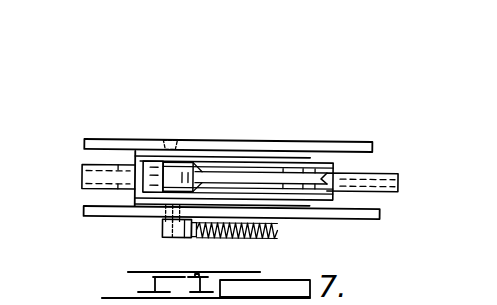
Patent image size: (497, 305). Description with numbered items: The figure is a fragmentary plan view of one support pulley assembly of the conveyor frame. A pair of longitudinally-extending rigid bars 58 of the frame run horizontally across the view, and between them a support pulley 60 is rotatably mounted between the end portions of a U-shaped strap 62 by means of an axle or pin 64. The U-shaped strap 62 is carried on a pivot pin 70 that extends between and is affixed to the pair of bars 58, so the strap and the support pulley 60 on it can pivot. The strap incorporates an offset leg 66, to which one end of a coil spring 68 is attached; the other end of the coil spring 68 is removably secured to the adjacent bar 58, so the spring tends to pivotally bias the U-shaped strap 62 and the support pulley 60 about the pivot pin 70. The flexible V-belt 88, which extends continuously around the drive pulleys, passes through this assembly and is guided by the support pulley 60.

The rigid bars 58 is at (108, 148).
The support pulley 60 is at (283, 163).
The U-shaped strap 62 is at (213, 153).
The axle or pin 64 is at (270, 158).
The offset leg 66 is at (166, 233).
The coil spring 68 is at (250, 240).
The pivot pin 70 is at (168, 146).
The flexible V-belt 88 is at (86, 178).